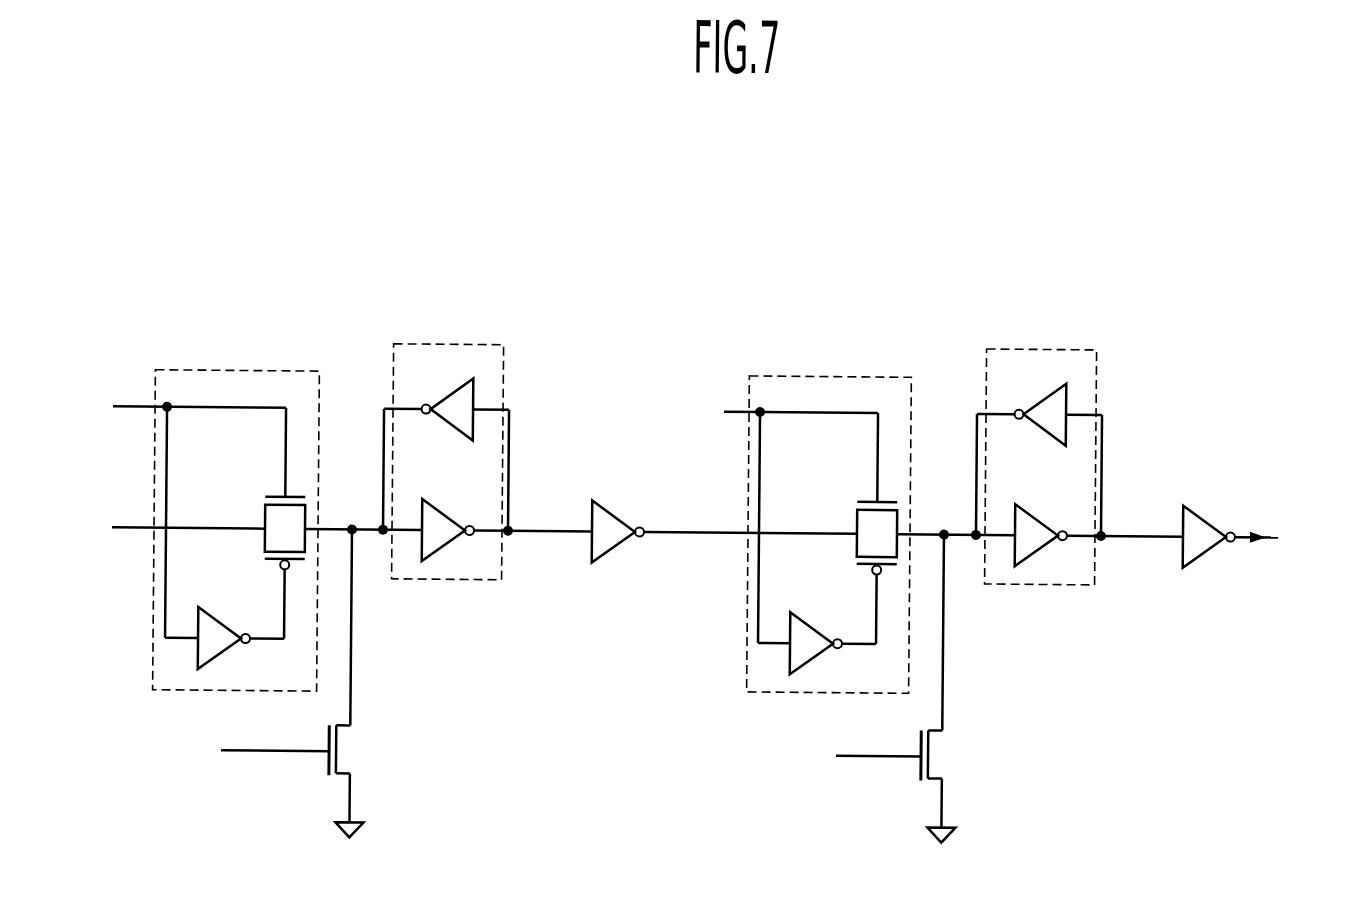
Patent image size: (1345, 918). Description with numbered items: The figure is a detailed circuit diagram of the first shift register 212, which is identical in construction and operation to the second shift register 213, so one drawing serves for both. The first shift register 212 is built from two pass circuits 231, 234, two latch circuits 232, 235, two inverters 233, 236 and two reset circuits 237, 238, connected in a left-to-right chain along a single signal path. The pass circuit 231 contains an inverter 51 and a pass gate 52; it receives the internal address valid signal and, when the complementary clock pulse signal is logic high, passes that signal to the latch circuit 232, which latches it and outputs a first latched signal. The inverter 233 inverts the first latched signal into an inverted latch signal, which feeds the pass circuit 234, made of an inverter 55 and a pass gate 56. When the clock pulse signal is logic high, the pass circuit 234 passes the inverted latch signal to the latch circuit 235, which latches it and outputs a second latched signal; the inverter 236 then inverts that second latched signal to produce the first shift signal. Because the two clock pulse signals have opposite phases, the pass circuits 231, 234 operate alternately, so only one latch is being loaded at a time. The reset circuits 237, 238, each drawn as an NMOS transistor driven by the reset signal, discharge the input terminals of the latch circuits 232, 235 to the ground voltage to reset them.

The first shift register 212 is at (683, 531).
The second shift register 213 is at (683, 531).
The pass circuit 231 is at (215, 508).
The latch circuit 232 is at (447, 343).
The inverter 233 is at (603, 504).
The pass circuit 234 is at (817, 512).
The latch circuit 235 is at (1042, 345).
The inverter 236 is at (1200, 502).
The reset circuit 237 is at (283, 706).
The reset circuit 238 is at (886, 710).
The inverter 51 is at (220, 620).
The pass gate 52 is at (263, 514).
The inverter 55 is at (810, 620).
The pass gate 56 is at (855, 507).